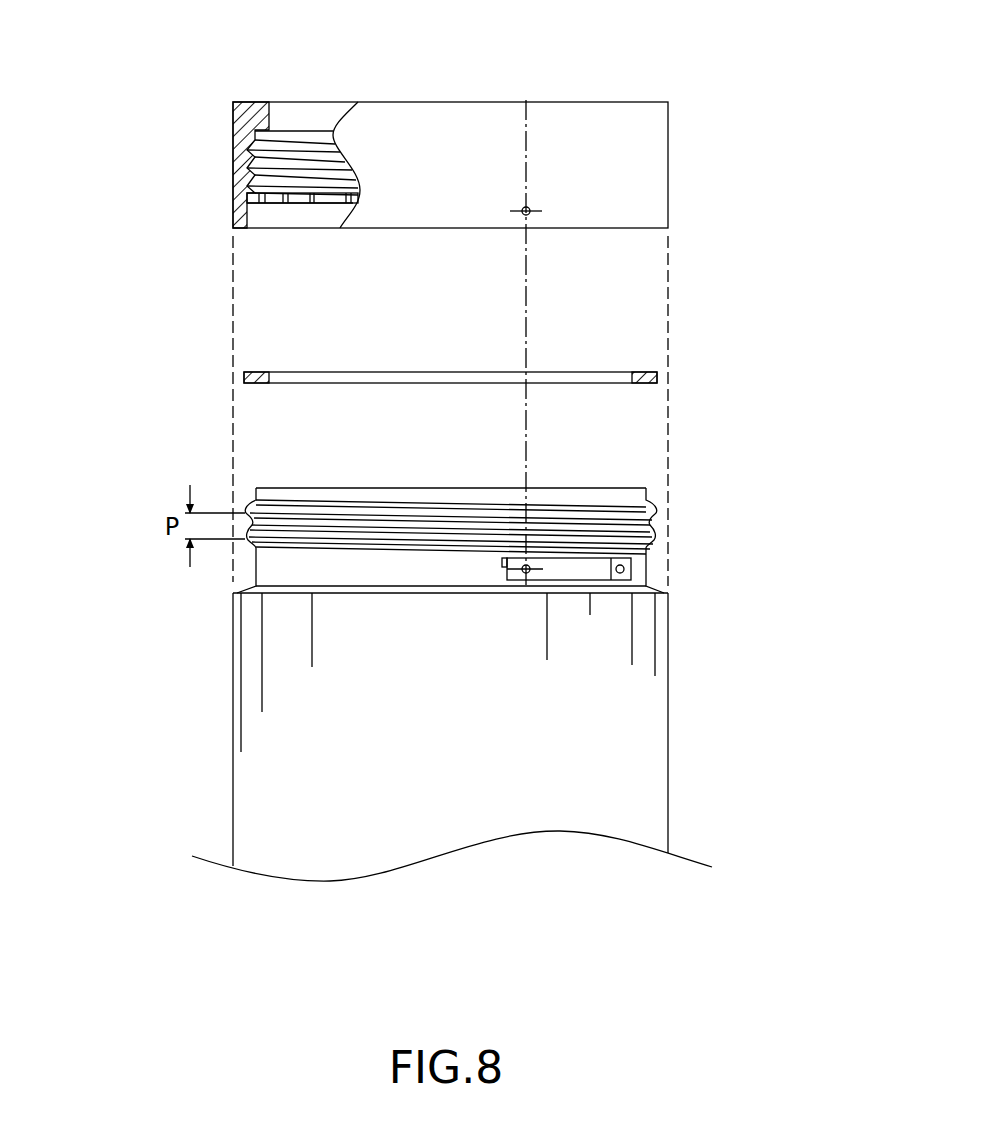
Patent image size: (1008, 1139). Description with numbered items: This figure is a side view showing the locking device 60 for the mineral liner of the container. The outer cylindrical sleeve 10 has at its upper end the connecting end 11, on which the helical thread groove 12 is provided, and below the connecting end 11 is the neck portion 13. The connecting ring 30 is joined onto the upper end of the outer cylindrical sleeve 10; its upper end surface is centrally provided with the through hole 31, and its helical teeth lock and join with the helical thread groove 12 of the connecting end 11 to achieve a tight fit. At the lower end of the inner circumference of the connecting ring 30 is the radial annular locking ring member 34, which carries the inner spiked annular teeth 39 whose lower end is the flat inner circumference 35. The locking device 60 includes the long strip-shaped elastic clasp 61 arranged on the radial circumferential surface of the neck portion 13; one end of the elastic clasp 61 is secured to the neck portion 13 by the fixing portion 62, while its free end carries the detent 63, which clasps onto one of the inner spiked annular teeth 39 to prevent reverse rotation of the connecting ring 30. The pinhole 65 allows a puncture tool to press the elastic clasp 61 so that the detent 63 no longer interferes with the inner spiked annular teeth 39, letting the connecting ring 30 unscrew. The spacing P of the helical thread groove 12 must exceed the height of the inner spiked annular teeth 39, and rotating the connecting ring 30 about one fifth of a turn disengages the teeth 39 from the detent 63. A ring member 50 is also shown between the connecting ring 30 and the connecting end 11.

The outer cylindrical sleeve 10 is at (200, 762).
The connecting end 11 is at (482, 528).
The helical thread groove 12 is at (650, 500).
The neck portion 13 is at (256, 568).
The connecting ring 30 is at (184, 148).
The through hole 31 is at (302, 118).
The locking ring member 34 is at (212, 197).
The flat inner circumference 35 is at (318, 212).
The inner spiked annular teeth 39 is at (297, 200).
The sealing ring 50 is at (658, 372).
The locking device 60 is at (652, 632).
The elastic clasp 61 is at (580, 573).
The fixing portion 62 is at (620, 573).
The detent 63 is at (505, 560).
The pinhole 65 is at (528, 208).